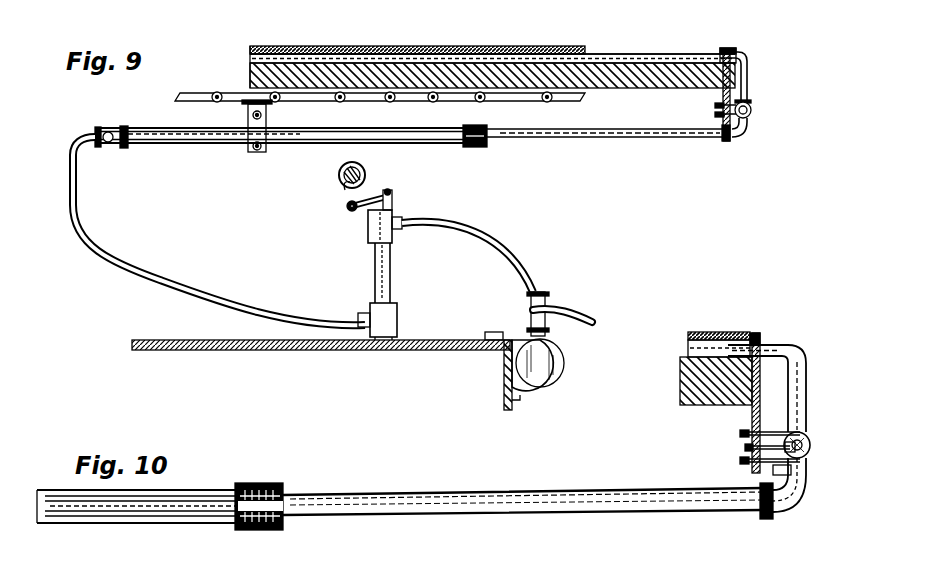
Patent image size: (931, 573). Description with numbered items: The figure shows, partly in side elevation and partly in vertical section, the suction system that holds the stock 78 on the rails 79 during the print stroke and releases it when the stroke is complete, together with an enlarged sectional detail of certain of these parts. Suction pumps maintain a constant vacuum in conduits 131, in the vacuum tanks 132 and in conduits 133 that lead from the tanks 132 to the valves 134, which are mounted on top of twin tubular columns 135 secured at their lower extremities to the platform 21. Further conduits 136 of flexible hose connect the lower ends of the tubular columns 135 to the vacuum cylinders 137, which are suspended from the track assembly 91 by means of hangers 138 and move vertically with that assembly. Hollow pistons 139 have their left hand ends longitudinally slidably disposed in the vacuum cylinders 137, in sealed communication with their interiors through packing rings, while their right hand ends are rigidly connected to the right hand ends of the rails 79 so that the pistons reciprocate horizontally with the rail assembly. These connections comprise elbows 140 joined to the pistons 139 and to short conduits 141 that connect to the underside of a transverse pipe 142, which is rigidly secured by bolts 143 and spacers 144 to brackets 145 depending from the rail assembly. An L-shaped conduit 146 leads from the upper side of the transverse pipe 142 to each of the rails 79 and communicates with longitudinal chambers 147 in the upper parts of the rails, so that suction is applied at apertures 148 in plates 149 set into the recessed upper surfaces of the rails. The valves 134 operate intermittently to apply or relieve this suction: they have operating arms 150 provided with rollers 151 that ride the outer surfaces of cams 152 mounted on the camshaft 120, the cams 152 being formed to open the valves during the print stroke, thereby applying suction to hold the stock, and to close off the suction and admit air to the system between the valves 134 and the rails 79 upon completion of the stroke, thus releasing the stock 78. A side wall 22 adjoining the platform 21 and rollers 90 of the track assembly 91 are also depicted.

In FIG. 9, the platform 21 is at (232, 350).
In FIG. 9, the side wall 22 is at (503, 379).
In FIG. 9, the stock 78 is at (408, 54).
In FIG. 9, the rails 79 is at (249, 72).
In FIG. 10, the rails 79 is at (680, 380).
In FIG. 9, the rollers 90 is at (424, 110).
In FIG. 9, the track assembly 91 is at (188, 88).
In FIG. 9, the camshaft 120 is at (366, 168).
In FIG. 9, the conduits 131 is at (575, 312).
In FIG. 9, the vacuum tanks 132 is at (556, 362).
In FIG. 9, the conduits 133 is at (506, 247).
In FIG. 9, the valves 134 is at (368, 227).
In FIG. 9, the tubular columns 135 is at (374, 264).
In FIG. 9, the conduits 136 is at (158, 278).
In FIG. 9, the vacuum cylinders 137 is at (200, 140).
In FIG. 10, the vacuum cylinders 137 is at (146, 527).
In FIG. 9, the hangers 138 is at (268, 120).
In FIG. 9, the hollow pistons 139 is at (576, 137).
In FIG. 10, the hollow pistons 139 is at (484, 493).
In FIG. 9, the elbows 140 is at (750, 132).
In FIG. 10, the elbows 140 is at (800, 512).
In FIG. 10, the short conduits 141 is at (772, 470).
In FIG. 9, the transverse pipe 142 is at (752, 108).
In FIG. 10, the transverse pipe 142 is at (810, 440).
In FIG. 9, the bolts 143 is at (713, 114).
In FIG. 10, the bolts 143 is at (738, 433).
In FIG. 10, the spacers 144 is at (743, 447).
In FIG. 9, the brackets 145 is at (722, 94).
In FIG. 10, the brackets 145 is at (760, 410).
In FIG. 9, the L-shaped conduit 146 is at (748, 74).
In FIG. 10, the L-shaped conduit 146 is at (778, 345).
In FIG. 9, the longitudinal chambers 147 is at (608, 57).
In FIG. 10, the longitudinal chambers 147 is at (688, 346).
In FIG. 9, the apertures 148 is at (326, 46).
In FIG. 9, the plates 149 is at (660, 54).
In FIG. 10, the plates 149 is at (703, 332).
In FIG. 9, the operating arms 150 is at (389, 194).
In FIG. 9, the rollers 151 is at (346, 206).
In FIG. 9, the cams 152 is at (338, 181).